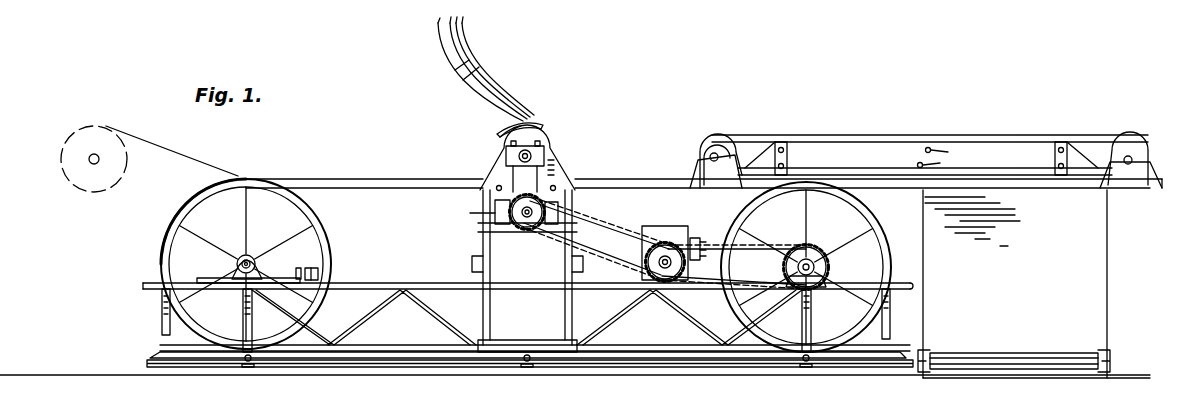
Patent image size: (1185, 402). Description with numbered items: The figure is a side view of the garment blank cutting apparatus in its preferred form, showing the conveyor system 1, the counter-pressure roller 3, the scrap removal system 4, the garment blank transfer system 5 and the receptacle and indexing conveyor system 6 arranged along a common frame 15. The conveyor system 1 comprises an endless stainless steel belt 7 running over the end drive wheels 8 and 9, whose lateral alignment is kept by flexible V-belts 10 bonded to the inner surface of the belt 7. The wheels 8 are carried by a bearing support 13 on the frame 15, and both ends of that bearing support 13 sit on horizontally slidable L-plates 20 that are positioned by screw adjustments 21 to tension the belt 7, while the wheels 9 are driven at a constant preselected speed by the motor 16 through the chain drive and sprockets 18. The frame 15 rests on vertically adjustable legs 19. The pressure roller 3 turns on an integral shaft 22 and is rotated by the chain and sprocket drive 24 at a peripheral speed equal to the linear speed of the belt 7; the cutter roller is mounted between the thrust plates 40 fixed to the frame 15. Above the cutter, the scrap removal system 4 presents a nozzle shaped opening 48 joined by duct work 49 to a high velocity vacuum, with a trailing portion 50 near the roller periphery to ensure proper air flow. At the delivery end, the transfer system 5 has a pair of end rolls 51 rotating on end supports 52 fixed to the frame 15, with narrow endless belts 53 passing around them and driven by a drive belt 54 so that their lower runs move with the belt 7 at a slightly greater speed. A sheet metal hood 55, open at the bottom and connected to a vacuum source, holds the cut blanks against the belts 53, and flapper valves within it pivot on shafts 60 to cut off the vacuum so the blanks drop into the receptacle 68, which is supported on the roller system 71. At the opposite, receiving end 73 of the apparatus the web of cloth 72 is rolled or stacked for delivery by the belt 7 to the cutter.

The conveyor system 1 is at (340, 178).
The counter-pressure roller 3 is at (470, 213).
The scrap removal system 4 is at (505, 92).
The garment blank transfer system 5 is at (815, 142).
The receptacle and indexing conveyor system 6 is at (1080, 313).
The endless belt 7 is at (370, 342).
The end drive wheel 8 is at (315, 234).
The end drive wheel 9 is at (732, 238).
The flexible V-belts 10 is at (420, 340).
The bearing support 13 is at (250, 258).
The frame 15 is at (480, 245).
The motor 16 is at (666, 242).
The chain drive and sprockets 18 is at (810, 258).
The vertically adjustable legs 19 is at (247, 372).
The L-plates 20 is at (292, 270).
The screw adjustments 21 is at (322, 280).
The integral shaft 22 is at (538, 205).
The chain and sprocket drive 24 is at (612, 222).
The thrust plates 40 is at (548, 152).
The nozzle shaped opening 48 is at (532, 122).
The duct work 49 is at (462, 33).
The trailing portion 50 is at (497, 133).
The end rolls 51 is at (722, 141).
The end supports 52 is at (712, 168).
The narrow endless belts 53 is at (935, 135).
The drive belt 54 is at (702, 236).
The sheet metal hood 55 is at (1020, 150).
The shafts 60 is at (948, 156).
The receptacle 68 is at (1080, 268).
The roller system 71 is at (1095, 356).
The web of cloth 72 is at (163, 147).
The receiving end 73 is at (240, 178).